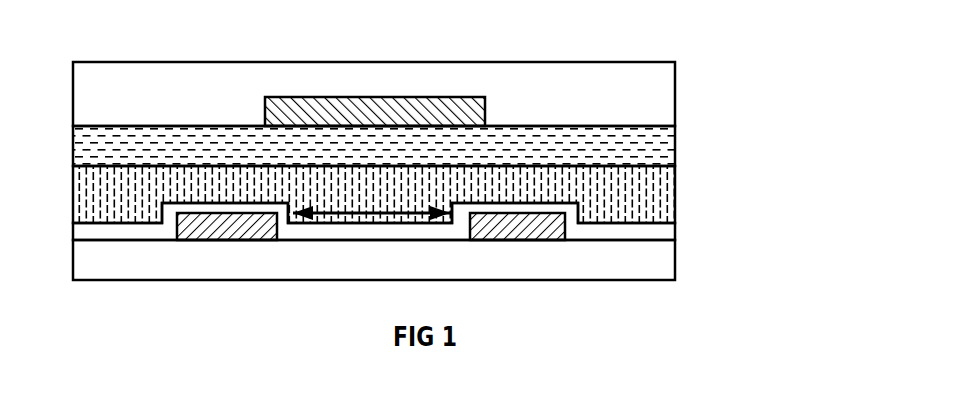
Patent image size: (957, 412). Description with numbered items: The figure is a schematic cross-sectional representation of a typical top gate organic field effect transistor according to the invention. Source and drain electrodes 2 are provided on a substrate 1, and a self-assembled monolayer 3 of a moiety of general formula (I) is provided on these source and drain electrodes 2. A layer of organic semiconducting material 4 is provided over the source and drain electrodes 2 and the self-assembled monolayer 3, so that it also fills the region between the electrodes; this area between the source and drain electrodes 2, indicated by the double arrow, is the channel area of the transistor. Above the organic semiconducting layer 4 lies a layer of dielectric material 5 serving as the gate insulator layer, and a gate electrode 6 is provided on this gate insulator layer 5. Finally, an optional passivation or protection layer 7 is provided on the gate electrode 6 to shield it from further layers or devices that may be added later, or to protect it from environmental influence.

The substrate 1 is at (667, 258).
The source and drain electrodes 2 is at (255, 228).
The self-assembled monolayer 3 is at (153, 227).
The layer of organic semiconducting material 4 is at (675, 200).
The layer of dielectric material 5 is at (663, 147).
The gate electrode 6 is at (481, 97).
The passivation or protection layer 7 is at (663, 93).